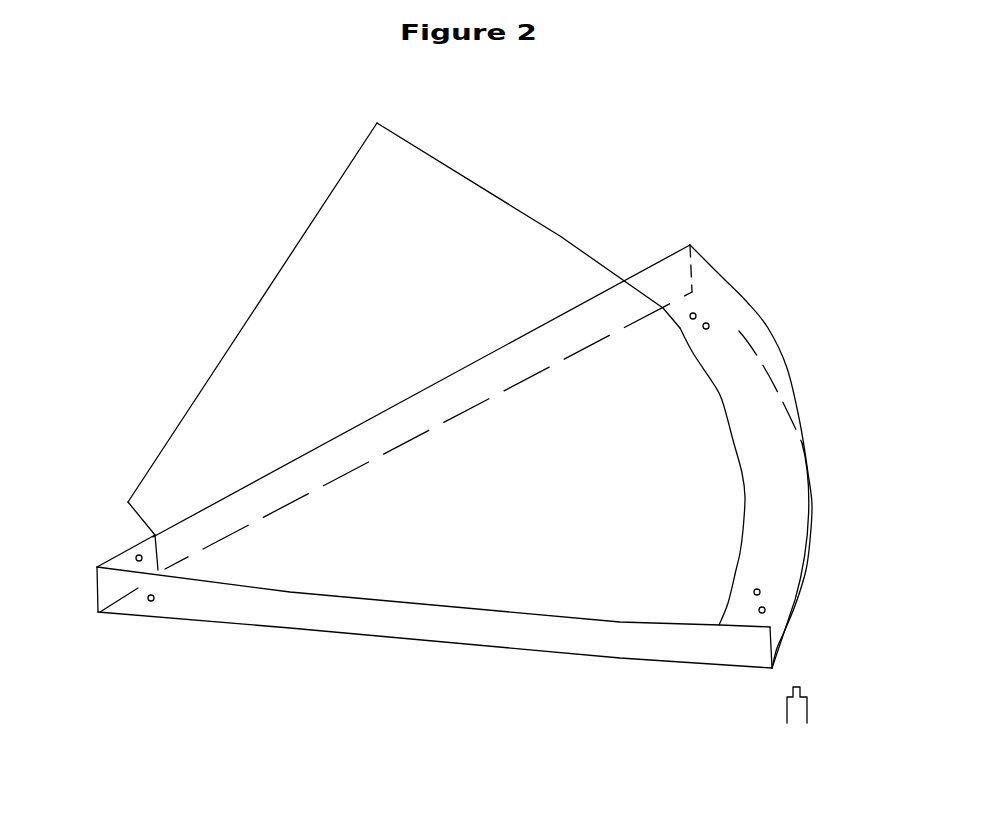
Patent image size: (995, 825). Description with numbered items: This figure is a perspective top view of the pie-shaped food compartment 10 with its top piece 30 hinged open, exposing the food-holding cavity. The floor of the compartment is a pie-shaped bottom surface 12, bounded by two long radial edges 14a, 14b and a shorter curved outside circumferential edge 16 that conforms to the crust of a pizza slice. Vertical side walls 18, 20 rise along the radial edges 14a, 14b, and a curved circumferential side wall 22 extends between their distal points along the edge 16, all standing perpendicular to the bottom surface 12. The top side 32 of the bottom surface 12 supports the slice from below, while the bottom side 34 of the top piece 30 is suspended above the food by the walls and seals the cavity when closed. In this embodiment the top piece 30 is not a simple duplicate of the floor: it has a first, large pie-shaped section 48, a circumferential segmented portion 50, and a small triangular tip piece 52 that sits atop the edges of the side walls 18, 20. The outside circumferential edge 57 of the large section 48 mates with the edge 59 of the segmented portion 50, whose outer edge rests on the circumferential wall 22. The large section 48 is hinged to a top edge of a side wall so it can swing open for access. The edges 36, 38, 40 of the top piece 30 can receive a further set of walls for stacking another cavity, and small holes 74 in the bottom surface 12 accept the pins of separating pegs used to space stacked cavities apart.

The food compartment 10 is at (567, 196).
The bottom surface 12 is at (573, 528).
The radial edge 14a is at (414, 441).
The radial edge 14b is at (485, 645).
The circumferential edge 16 is at (800, 437).
The side wall 18 is at (197, 608).
The side wall 20 is at (315, 472).
The circumferential side wall 22 is at (783, 373).
The top piece 30 is at (378, 317).
The top side 32 is at (640, 598).
The bottom side 34 is at (430, 207).
The edge 36 is at (413, 600).
The edge 38 is at (512, 337).
The edge 40 is at (765, 326).
The large pie-shaped section 48 is at (188, 448).
The circumferential segmented portion 50 is at (793, 527).
The tip piece 52 is at (120, 560).
The outside circumferential edge 57 is at (590, 256).
The edge 59 is at (745, 487).
The holes 74 is at (693, 316).